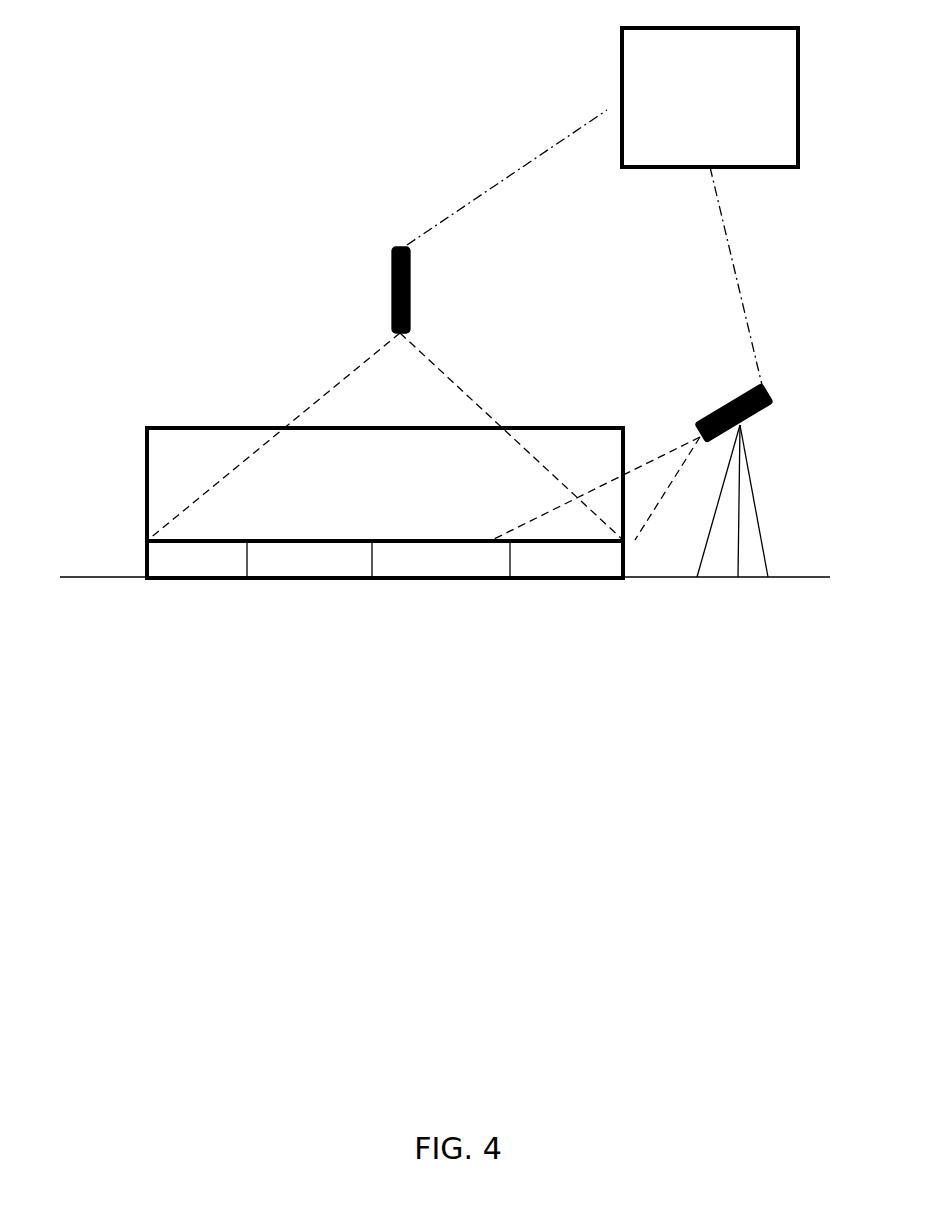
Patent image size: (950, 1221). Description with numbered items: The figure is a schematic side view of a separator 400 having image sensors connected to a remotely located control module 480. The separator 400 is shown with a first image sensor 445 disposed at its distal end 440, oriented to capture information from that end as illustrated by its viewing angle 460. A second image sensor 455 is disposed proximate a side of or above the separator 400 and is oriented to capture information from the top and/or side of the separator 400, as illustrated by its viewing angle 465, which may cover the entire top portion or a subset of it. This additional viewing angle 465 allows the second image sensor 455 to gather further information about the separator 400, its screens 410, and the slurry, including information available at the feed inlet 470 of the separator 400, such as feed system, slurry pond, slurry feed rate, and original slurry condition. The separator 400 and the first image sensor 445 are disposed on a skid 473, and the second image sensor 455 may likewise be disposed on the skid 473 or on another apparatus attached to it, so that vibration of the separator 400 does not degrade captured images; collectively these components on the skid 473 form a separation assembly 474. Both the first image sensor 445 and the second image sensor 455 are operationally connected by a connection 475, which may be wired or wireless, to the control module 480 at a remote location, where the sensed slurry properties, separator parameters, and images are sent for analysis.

The separator 400 is at (238, 428).
The screens 410 is at (320, 565).
The distal end 440 is at (644, 425).
The first image sensor 445 is at (768, 388).
The second image sensor 455 is at (400, 246).
The viewing angle 460 is at (596, 488).
The viewing angle 465 is at (385, 436).
The feed inlet 470 is at (146, 483).
The skid 473 is at (112, 577).
The separation assembly 474 is at (285, 330).
The connection 475 is at (535, 160).
The control module 480 is at (710, 97).